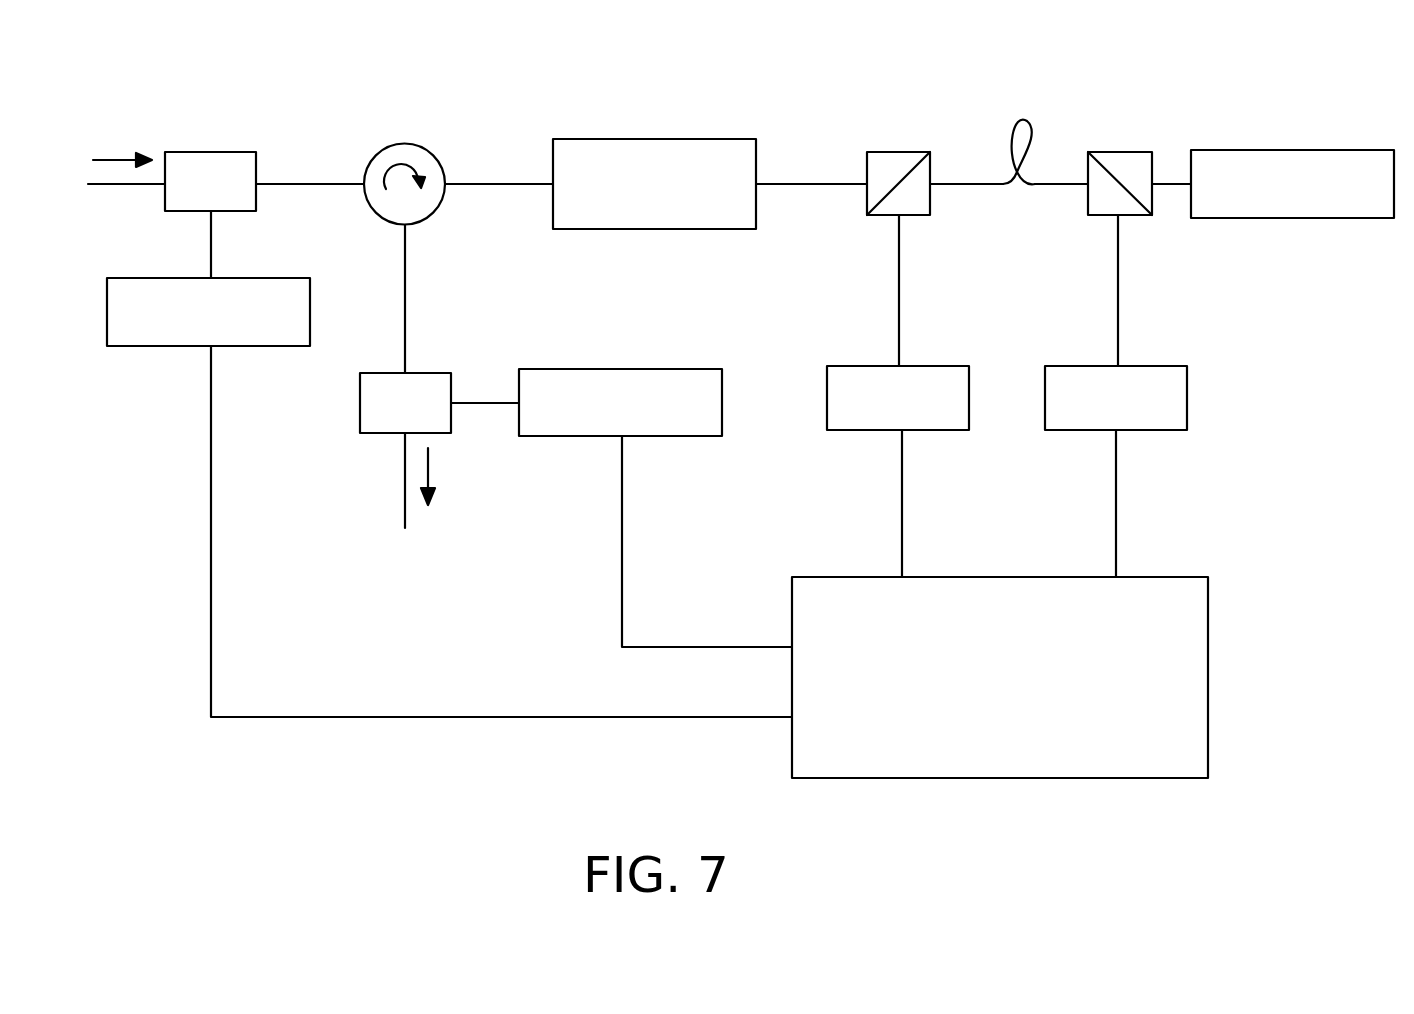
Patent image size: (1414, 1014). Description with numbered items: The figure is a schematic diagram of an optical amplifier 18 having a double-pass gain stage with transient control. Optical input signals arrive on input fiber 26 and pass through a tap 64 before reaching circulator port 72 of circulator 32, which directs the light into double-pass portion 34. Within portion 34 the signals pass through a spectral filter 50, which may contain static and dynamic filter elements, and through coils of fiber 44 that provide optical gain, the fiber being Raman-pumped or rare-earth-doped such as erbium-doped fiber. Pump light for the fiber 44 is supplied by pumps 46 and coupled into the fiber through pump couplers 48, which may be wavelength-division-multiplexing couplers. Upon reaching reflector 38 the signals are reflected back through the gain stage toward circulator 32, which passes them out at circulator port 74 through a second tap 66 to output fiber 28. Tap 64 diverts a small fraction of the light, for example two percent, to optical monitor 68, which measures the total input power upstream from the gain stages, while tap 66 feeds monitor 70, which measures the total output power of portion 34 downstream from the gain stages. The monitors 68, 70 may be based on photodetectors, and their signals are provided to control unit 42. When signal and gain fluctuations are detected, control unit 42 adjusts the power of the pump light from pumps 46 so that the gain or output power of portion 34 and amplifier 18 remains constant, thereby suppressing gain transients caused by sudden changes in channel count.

The optical amplifier 18 is at (697, 47).
The input fiber 26 is at (120, 186).
The output fiber 28 is at (405, 470).
The circulator 32 is at (427, 149).
The double-pass portion 34 is at (1028, 76).
The reflector 38 is at (1279, 219).
The control unit 42 is at (1057, 780).
The coils of fiber 44 is at (1056, 135).
The pumps 46 is at (1058, 428).
The pump couplers 48 is at (915, 217).
The spectral filter 50 is at (580, 230).
The tap 64 is at (233, 151).
The tap 66 is at (420, 372).
The optical monitor 68 is at (130, 347).
The optical monitor 70 is at (555, 437).
The circulator port 72 is at (316, 186).
The circulator port 74 is at (407, 262).